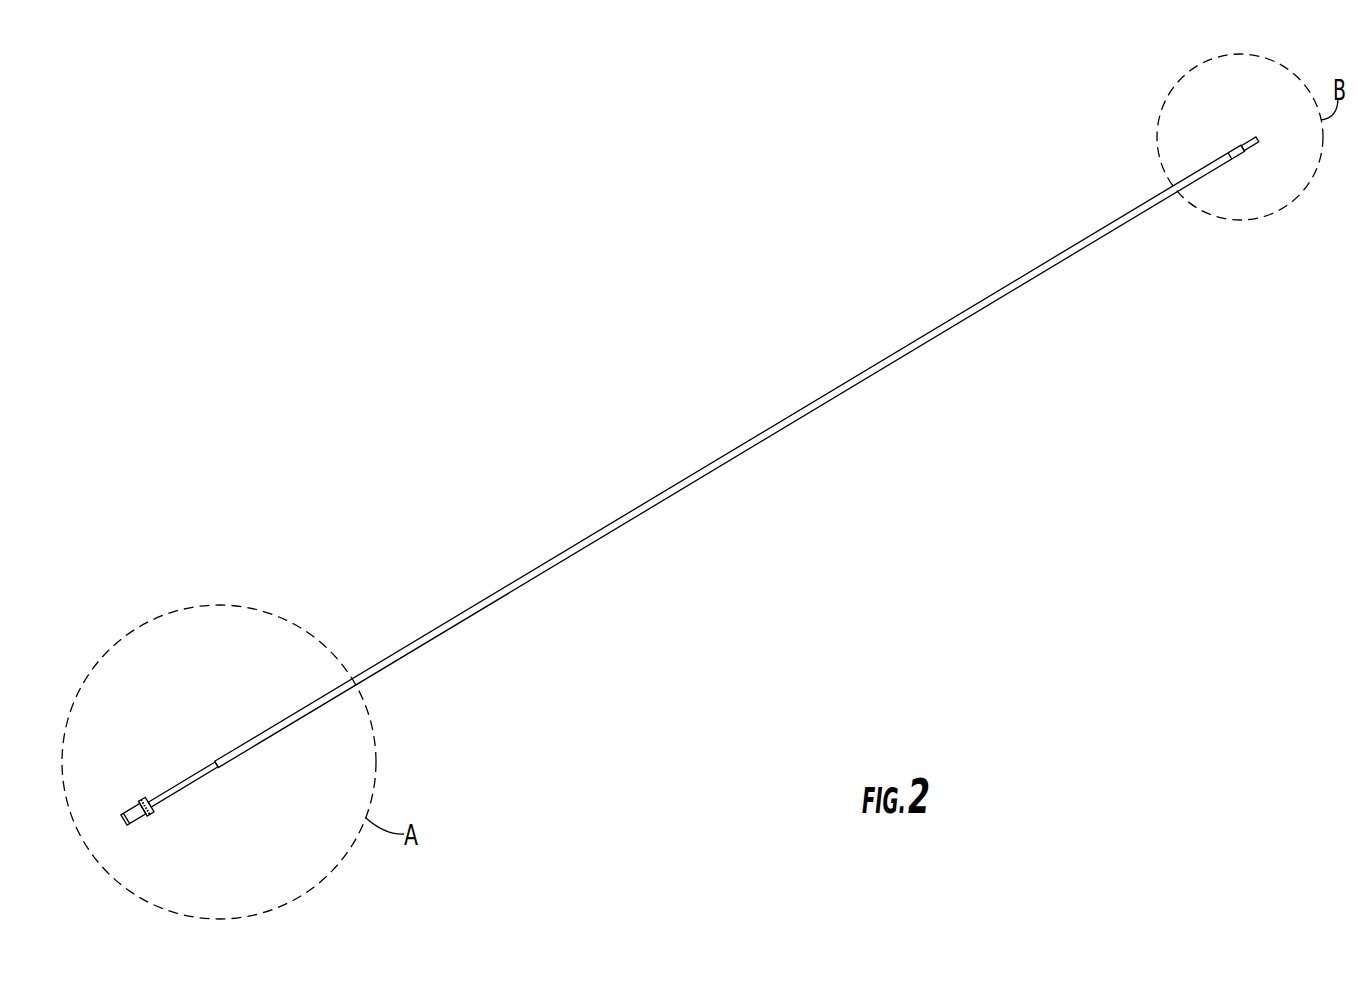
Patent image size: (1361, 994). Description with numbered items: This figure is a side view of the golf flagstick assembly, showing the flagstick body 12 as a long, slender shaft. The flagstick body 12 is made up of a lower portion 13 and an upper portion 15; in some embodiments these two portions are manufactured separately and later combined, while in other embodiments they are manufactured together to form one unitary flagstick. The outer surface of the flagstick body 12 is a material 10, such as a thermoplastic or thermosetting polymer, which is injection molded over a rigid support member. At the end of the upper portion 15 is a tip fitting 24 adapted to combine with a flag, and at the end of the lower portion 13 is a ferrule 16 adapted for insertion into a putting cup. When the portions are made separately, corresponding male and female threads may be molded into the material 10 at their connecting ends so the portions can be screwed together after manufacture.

The material 10 is at (648, 514).
The flagstick body 12 is at (693, 412).
The lower portion 13 is at (391, 648).
The upper portion 15 is at (1050, 279).
The ferrule 16 is at (136, 815).
The tip fitting 24 is at (1257, 137).